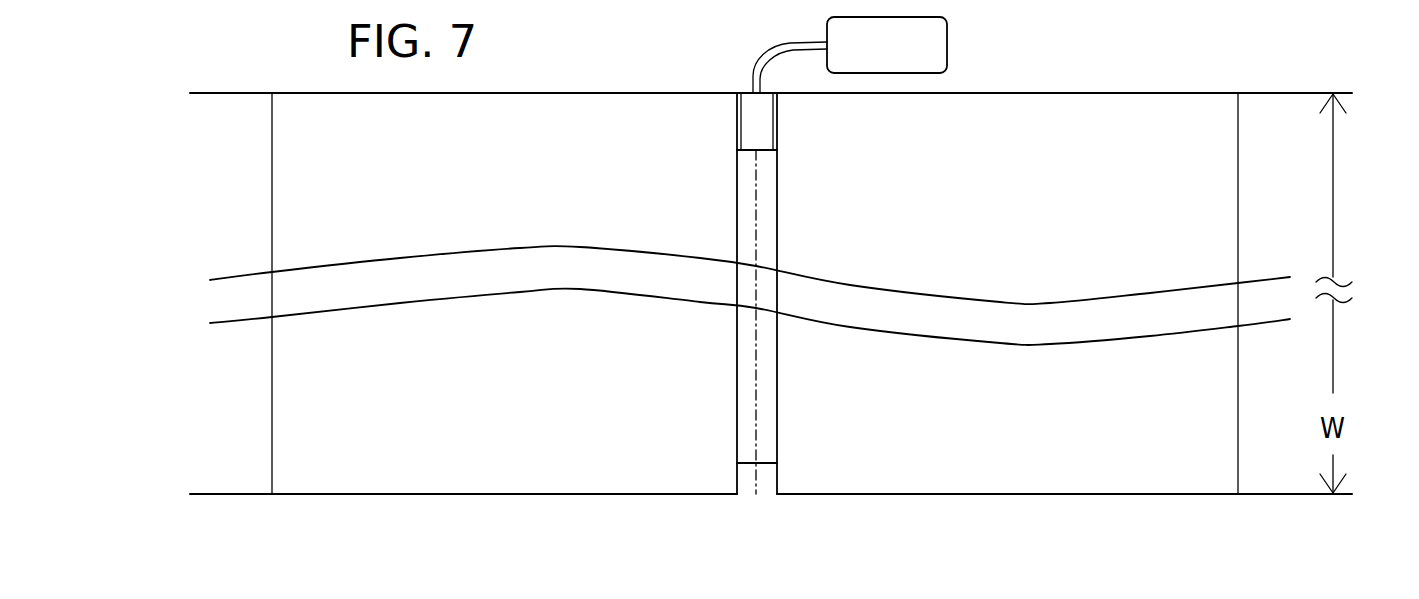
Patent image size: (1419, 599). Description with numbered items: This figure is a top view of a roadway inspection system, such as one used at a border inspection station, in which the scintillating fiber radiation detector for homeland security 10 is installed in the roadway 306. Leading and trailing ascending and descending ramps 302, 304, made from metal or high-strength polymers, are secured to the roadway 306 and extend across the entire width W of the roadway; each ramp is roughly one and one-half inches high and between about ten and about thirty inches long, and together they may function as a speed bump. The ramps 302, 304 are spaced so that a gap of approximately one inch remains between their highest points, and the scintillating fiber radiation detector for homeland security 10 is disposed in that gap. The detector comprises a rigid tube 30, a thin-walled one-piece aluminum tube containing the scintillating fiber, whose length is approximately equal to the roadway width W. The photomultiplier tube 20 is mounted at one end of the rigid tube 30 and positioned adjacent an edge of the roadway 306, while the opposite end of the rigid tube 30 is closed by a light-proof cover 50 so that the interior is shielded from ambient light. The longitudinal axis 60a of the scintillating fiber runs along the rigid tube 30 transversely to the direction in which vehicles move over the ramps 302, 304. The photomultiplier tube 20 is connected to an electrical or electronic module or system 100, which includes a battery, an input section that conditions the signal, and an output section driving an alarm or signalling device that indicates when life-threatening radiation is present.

The scintillating fiber radiation detector for homeland security 10 is at (738, 248).
The photomultiplier tube 20 is at (751, 105).
The rigid tube 30 is at (767, 360).
The light-proof cover 50 is at (766, 475).
The longitudinal axis 60a is at (756, 208).
The electrical or electronic module or system 100 is at (915, 45).
The leading ascending ramp 302 is at (580, 465).
The trailing descending ramp 304 is at (928, 465).
The roadway 306 is at (228, 156).